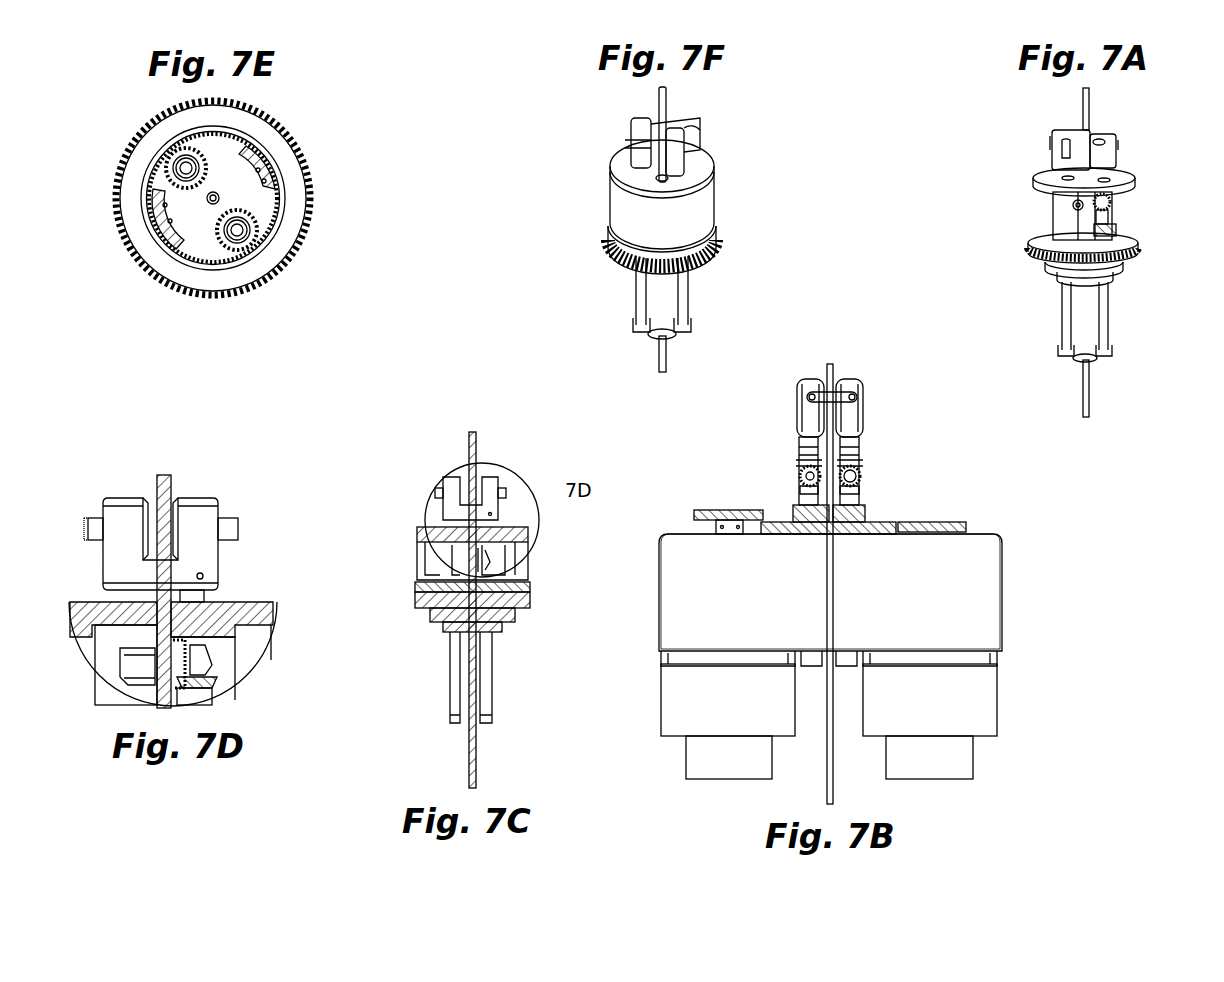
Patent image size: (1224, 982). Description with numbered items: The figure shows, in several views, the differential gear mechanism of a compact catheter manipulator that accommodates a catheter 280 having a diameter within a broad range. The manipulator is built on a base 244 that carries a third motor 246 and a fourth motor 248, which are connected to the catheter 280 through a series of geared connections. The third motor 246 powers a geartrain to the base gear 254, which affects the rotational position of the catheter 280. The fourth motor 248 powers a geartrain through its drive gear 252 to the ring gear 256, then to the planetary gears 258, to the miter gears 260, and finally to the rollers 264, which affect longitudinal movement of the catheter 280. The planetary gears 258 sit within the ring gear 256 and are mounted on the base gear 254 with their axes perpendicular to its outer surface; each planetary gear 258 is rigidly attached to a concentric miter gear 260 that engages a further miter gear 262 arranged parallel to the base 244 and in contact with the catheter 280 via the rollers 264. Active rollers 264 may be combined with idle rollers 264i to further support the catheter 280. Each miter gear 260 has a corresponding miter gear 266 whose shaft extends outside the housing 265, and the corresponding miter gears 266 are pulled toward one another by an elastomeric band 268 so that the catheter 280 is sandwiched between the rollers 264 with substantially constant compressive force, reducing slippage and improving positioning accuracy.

In FIG. 7B, the base 244 is at (990, 603).
In FIG. 7B, the third motor 246 is at (963, 755).
In FIG. 7B, the fourth motor 248 is at (730, 760).
In FIG. 7B, the drive gear 252 is at (760, 510).
In FIG. 7E, the base gear 254 is at (196, 242).
In FIG. 7F, the base gear 254 is at (614, 238).
In FIG. 7A, the base gear 254 is at (1044, 234).
In FIG. 7E, the ring gear 256 is at (240, 140).
In FIG. 7F, the ring gear 256 is at (712, 241).
In FIG. 7E, the planet gears 258 is at (246, 238).
In FIG. 7A, the planet gears 258 is at (1120, 230).
In FIG. 7B, the planet gears 258 is at (868, 513).
In FIG. 7A, the miter gear 260 is at (1118, 205).
In FIG. 7B, the miter gear 260 is at (868, 490).
In FIG. 7B, the miter gear 262 is at (868, 470).
In FIG. 7D, the rollers 264 is at (135, 662).
In FIG. 7A, the idle rollers 264i is at (1050, 150).
In FIG. 7F, the housing 265 is at (612, 197).
In FIG. 7D, the housing 265 is at (205, 527).
In FIG. 7C, the housing 265 is at (472, 600).
In FIG. 7D, the corresponding miter gear 266 is at (200, 650).
In FIG. 7B, the elastomeric band 268 is at (860, 388).
In FIG. 7D, the catheter 280 is at (158, 500).
In FIG. 7C, the catheter 280 is at (478, 705).